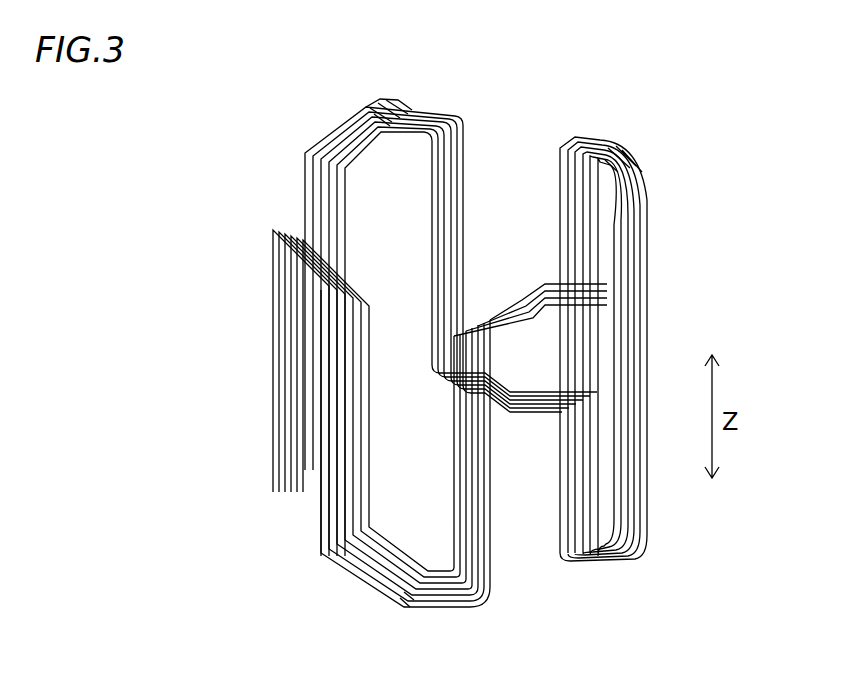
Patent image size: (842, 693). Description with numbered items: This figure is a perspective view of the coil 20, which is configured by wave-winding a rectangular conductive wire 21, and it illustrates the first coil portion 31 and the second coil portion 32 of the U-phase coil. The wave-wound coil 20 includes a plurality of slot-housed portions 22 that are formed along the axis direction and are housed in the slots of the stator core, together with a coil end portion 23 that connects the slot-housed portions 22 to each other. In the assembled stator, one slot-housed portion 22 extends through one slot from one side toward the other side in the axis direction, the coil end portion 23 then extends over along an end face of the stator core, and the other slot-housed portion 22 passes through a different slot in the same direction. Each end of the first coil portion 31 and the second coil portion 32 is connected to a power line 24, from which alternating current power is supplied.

The coil 20 is at (276, 150).
The first coil portion 31 is at (411, 360).
The second coil portion 32 is at (603, 349).
The rectangular conductive wire 21 is at (465, 153).
The slot-housed portion 22 is at (348, 237).
The coil end portion 23 is at (427, 103).
The power line 24 is at (607, 282).